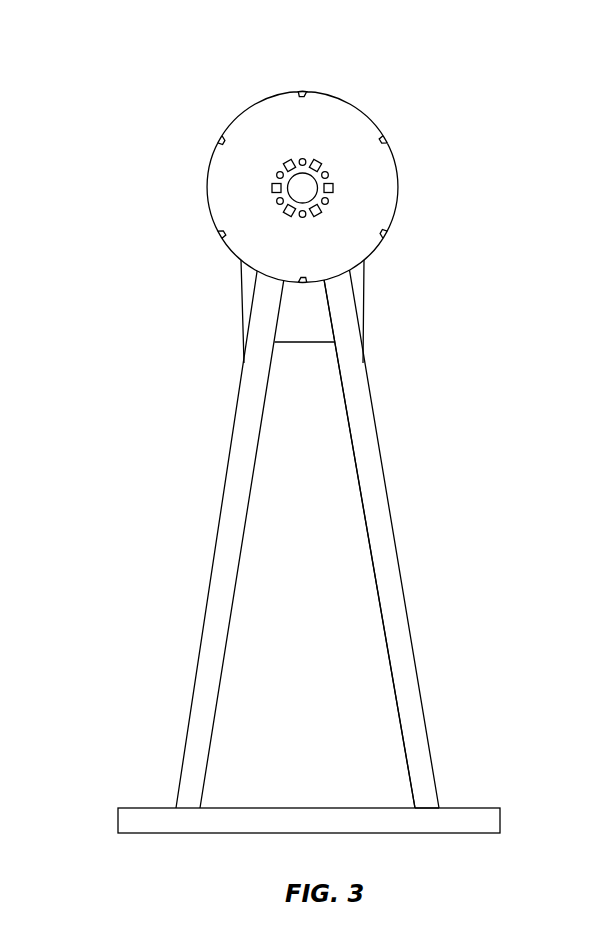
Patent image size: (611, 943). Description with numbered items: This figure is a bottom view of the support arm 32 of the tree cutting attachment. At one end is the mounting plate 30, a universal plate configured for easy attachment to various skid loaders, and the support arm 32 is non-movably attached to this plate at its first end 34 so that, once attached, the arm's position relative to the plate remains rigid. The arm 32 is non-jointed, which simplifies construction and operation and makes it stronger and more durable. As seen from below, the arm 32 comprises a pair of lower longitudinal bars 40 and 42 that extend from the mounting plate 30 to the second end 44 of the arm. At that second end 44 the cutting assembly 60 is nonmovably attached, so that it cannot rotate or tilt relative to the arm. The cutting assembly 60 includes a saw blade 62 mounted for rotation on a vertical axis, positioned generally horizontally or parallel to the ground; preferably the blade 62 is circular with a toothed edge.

The mounting plate 30 is at (150, 808).
The support arm 32 is at (392, 508).
The first end 34 is at (438, 790).
The lower longitudinal bar 40 is at (203, 703).
The lower longitudinal bar 42 is at (400, 663).
The second end 44 is at (273, 295).
The cutting assembly 60 is at (355, 165).
The saw blade 62 is at (317, 123).